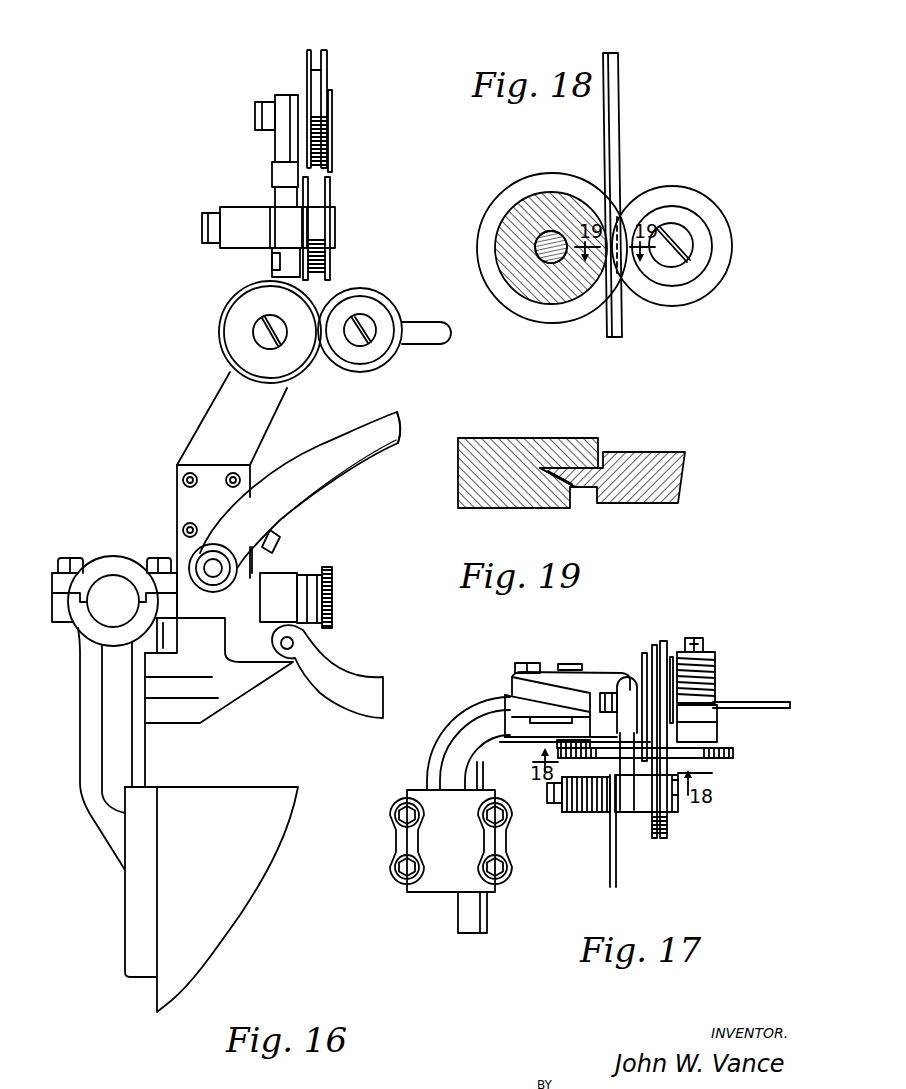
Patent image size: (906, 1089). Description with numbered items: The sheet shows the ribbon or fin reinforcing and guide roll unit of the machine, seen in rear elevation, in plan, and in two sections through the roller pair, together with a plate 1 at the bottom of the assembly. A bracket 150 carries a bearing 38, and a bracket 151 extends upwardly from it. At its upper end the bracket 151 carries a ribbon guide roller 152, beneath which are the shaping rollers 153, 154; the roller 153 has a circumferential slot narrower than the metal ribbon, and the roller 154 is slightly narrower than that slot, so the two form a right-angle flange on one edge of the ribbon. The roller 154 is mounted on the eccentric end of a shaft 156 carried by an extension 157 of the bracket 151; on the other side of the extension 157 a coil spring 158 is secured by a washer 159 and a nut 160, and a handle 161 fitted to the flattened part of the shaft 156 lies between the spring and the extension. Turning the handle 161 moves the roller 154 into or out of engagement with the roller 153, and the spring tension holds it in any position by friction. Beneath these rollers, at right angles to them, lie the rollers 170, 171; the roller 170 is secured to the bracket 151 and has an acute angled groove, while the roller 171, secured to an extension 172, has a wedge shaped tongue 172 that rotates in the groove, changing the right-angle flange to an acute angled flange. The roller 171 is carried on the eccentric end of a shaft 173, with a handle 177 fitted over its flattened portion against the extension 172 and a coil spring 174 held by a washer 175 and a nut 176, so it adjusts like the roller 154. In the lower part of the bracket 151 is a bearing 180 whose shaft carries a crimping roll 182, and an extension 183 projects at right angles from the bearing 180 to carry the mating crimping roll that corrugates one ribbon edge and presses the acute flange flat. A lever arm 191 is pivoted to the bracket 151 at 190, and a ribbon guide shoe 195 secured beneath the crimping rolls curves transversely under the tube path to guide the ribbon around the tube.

In FIG. 16, the plate 1 is at (227, 902).
In FIG. 16, the bearing 38 is at (104, 568).
In FIG. 16, the bracket 150 is at (84, 712).
In FIG. 16, the bracket 151 is at (210, 428).
In FIG. 16, the ribbon guide roller 152 is at (322, 60).
In FIG. 16, the shaping roller 154 is at (330, 202).
In FIG. 17, the shaping roller 154 is at (662, 840).
In FIG. 16, the roller 170 is at (235, 310).
In FIG. 18, the roller 170 is at (545, 172).
In FIG. 19, the roller 170 is at (512, 447).
In FIG. 16, the roller 171 is at (373, 313).
In FIG. 18, the roller 171 is at (713, 210).
In FIG. 19, the roller 171 is at (662, 460).
In FIG. 17, the roller 171 is at (735, 752).
In FIG. 19, the extension 172 is at (585, 490).
In FIG. 17, the extension 172 is at (718, 725).
In FIG. 16, the bearing 180 is at (270, 556).
In FIG. 16, the crimping roll 182 is at (330, 571).
In FIG. 16, the extension 183 is at (280, 597).
In FIG. 16, the pivot 190 is at (258, 473).
In FIG. 16, the lever arm 191 is at (365, 448).
In FIG. 16, the ribbon guide shoe 195 is at (367, 713).
In FIG. 17, the shaping roller 153 is at (662, 648).
In FIG. 17, the shaft 156 is at (545, 795).
In FIG. 17, the extension 157 is at (628, 805).
In FIG. 17, the coil spring 158 is at (600, 812).
In FIG. 17, the washer 159 is at (562, 812).
In FIG. 17, the nut 160 is at (549, 803).
In FIG. 17, the handle 161 is at (610, 870).
In FIG. 17, the shaft 173 is at (697, 638).
In FIG. 17, the coil spring 174 is at (713, 672).
In FIG. 17, the washer 175 is at (718, 650).
In FIG. 17, the nut 176 is at (708, 643).
In FIG. 17, the handle 177 is at (757, 700).